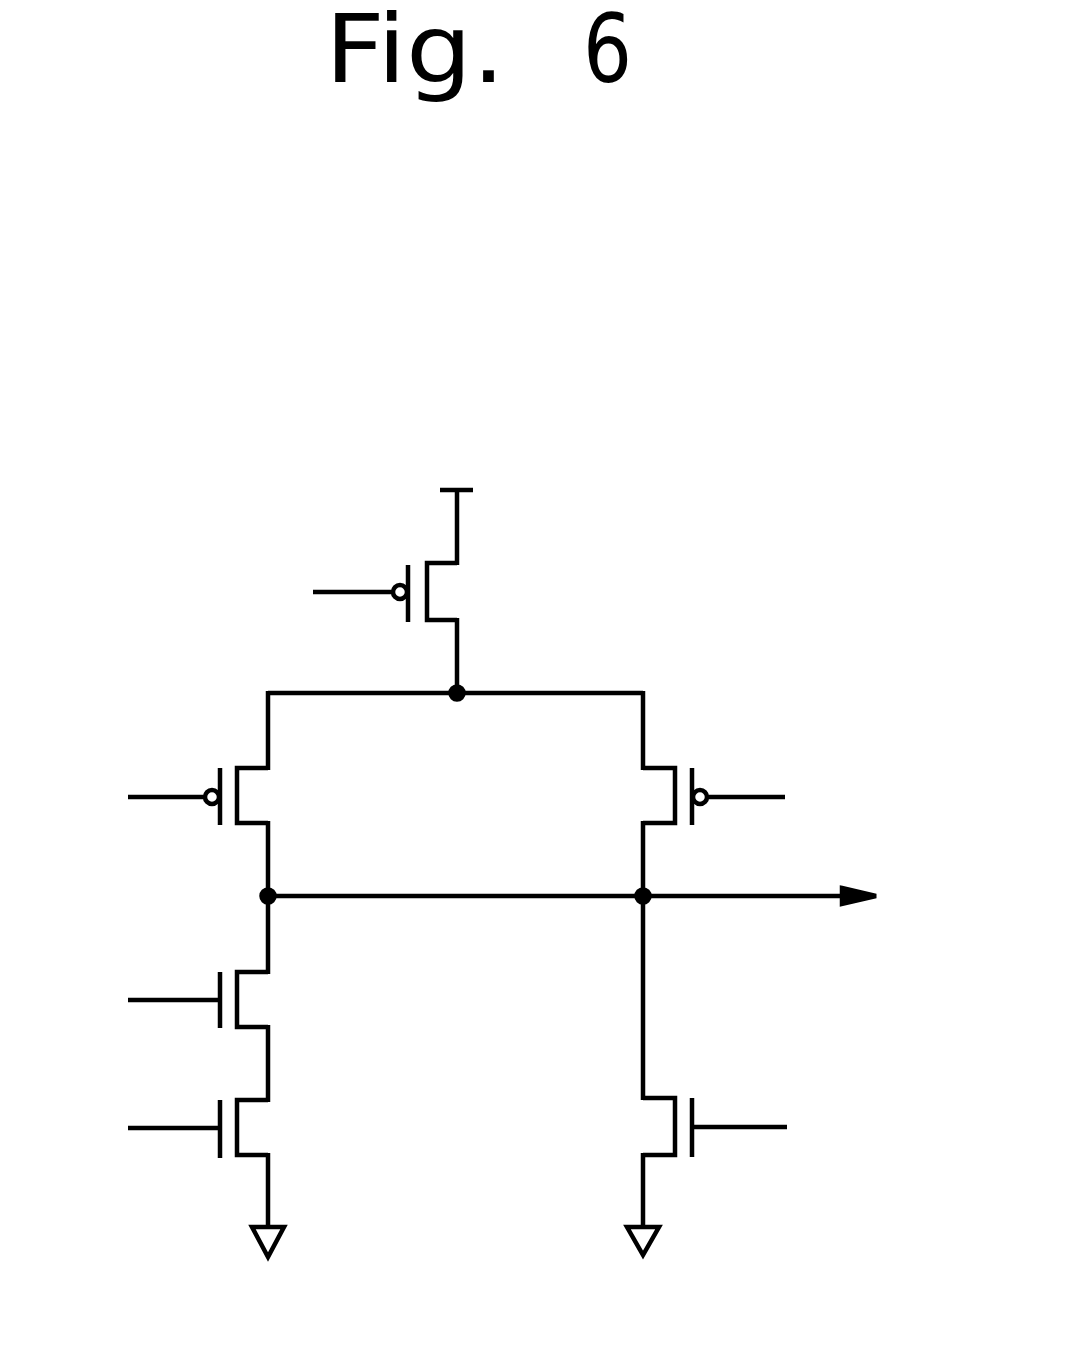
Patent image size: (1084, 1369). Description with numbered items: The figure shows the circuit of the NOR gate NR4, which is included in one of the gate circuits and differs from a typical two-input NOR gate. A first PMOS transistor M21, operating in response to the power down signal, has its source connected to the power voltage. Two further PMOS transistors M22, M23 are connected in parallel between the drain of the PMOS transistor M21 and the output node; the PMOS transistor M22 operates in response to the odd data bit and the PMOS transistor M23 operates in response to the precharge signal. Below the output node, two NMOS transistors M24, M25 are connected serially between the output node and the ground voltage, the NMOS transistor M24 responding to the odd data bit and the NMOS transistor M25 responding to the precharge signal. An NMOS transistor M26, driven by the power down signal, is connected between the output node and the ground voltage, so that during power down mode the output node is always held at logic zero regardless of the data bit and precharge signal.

The NOR gate NR4 is at (920, 315).
The PMOS transistor M21 is at (417, 593).
The PMOS transistor M22 is at (235, 797).
The PMOS transistor M23 is at (678, 797).
The NMOS transistor M24 is at (235, 1001).
The NMOS transistor M25 is at (235, 1129).
The NMOS transistor M26 is at (679, 1128).